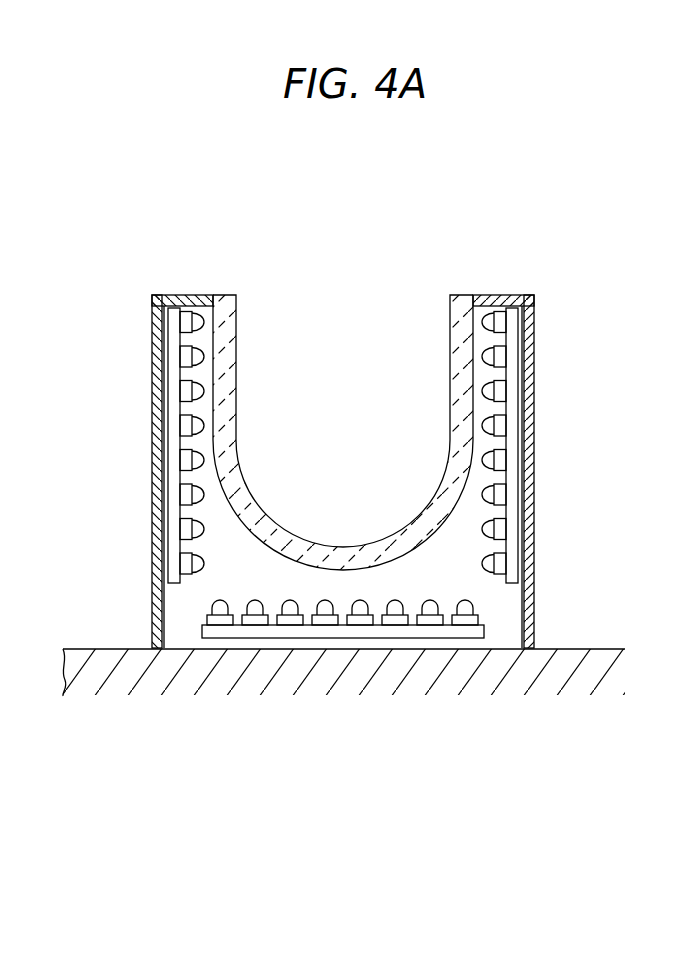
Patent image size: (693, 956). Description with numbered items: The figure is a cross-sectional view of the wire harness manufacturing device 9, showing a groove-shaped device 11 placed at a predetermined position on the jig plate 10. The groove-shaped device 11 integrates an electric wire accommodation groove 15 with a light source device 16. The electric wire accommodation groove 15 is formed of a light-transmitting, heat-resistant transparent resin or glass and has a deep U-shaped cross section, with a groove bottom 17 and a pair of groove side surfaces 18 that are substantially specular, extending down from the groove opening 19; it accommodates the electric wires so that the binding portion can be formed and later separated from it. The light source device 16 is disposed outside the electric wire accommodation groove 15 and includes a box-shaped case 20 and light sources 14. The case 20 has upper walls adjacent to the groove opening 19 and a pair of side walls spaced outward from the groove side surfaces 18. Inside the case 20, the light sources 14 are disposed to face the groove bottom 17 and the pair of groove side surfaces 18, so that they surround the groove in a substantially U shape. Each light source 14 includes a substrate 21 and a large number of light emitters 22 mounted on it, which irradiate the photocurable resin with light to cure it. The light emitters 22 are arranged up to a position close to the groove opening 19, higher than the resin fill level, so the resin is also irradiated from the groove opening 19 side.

The wire harness manufacturing device 9 is at (192, 166).
The jig plate 10 is at (72, 650).
The groove-shaped device 11 is at (303, 274).
The light source 14 is at (175, 413).
The electric wire accommodation groove 15 is at (343, 386).
The light source device 16 is at (96, 737).
The groove bottom 17 is at (343, 548).
The groove side surfaces 18 is at (237, 350).
The groove opening 19 is at (400, 297).
The case 20 is at (497, 297).
The substrate 21 is at (176, 490).
The light emitters 22 is at (213, 453).